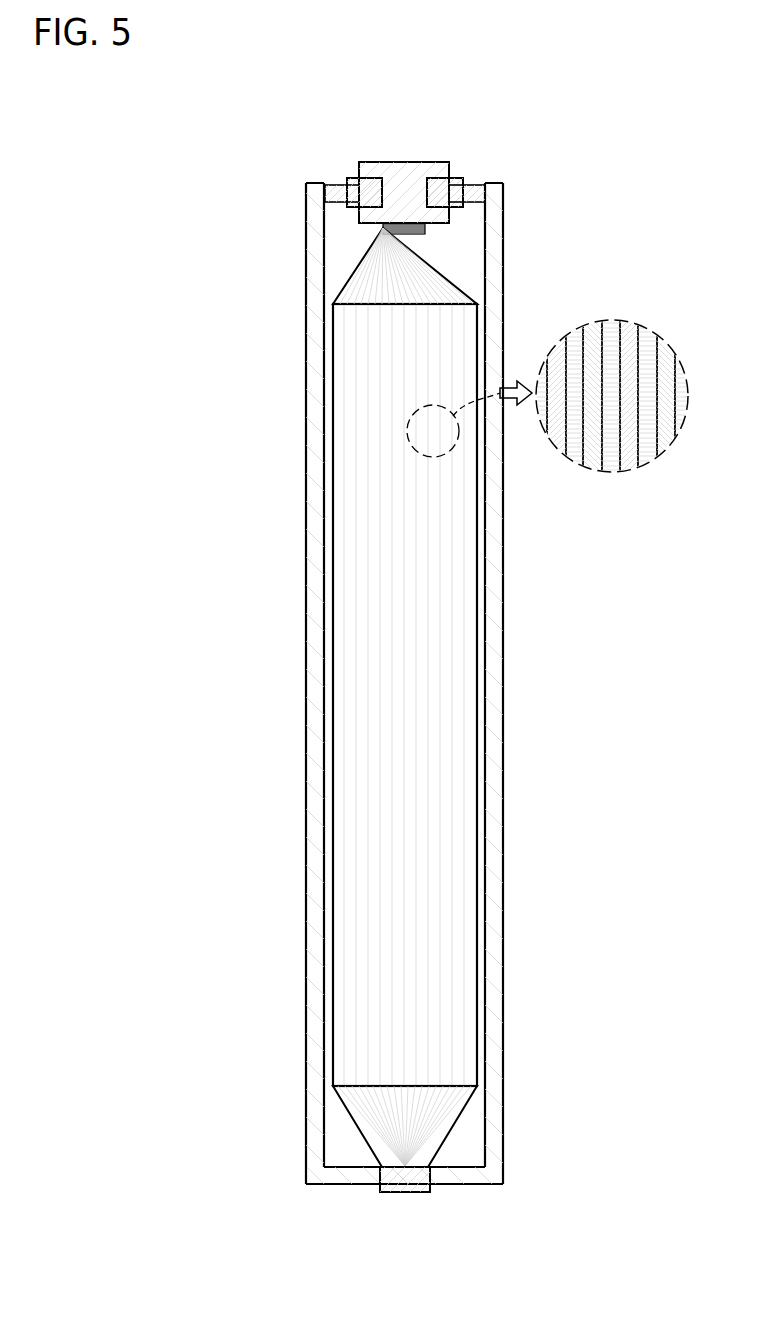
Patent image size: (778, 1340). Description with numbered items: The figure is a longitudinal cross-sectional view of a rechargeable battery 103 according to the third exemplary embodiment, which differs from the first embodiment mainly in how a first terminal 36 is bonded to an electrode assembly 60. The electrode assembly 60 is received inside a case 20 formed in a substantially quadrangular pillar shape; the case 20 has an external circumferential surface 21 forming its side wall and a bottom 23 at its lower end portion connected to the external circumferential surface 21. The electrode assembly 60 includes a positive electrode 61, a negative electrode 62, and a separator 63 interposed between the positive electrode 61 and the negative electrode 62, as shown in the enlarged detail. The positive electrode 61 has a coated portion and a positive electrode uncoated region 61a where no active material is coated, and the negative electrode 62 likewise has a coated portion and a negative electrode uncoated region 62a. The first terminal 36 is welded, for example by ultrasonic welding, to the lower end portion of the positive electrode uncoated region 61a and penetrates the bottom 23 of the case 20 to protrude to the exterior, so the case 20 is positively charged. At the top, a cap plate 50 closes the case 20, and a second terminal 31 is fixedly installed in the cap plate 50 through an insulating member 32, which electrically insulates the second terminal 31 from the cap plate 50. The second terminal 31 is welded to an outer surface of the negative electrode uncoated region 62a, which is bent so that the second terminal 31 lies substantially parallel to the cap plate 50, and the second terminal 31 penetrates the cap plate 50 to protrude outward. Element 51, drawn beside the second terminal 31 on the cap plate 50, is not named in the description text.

The rechargeable battery 103 is at (297, 99).
The case 20 is at (519, 746).
The external circumferential surface 21 is at (495, 833).
The bottom 23 is at (476, 1180).
The second terminal 31 is at (393, 170).
The insulating member 32 is at (349, 178).
The first terminal 36 is at (402, 1190).
The cap plate 50 is at (478, 190).
The gasket 51 is at (432, 190).
The electrode assembly 60 is at (462, 635).
The positive electrode 61 is at (560, 448).
The positive electrode uncoated region 61a is at (468, 1103).
The negative electrode 62 is at (593, 460).
The negative electrode uncoated region 62a is at (427, 270).
The separator 63 is at (612, 450).